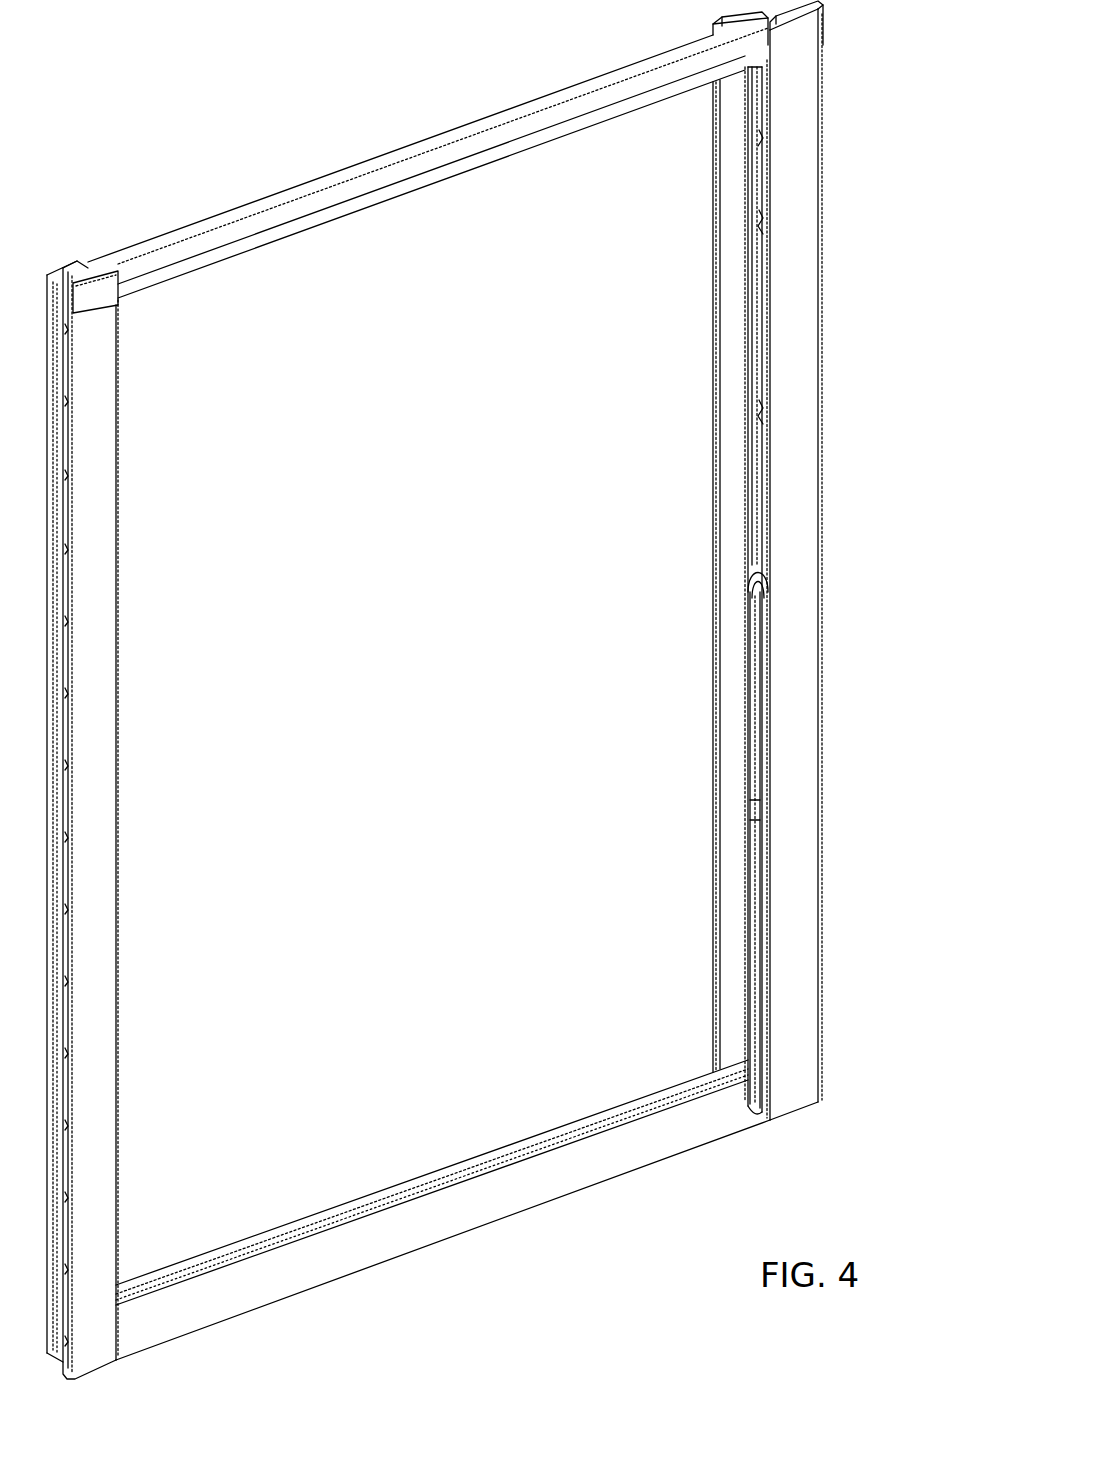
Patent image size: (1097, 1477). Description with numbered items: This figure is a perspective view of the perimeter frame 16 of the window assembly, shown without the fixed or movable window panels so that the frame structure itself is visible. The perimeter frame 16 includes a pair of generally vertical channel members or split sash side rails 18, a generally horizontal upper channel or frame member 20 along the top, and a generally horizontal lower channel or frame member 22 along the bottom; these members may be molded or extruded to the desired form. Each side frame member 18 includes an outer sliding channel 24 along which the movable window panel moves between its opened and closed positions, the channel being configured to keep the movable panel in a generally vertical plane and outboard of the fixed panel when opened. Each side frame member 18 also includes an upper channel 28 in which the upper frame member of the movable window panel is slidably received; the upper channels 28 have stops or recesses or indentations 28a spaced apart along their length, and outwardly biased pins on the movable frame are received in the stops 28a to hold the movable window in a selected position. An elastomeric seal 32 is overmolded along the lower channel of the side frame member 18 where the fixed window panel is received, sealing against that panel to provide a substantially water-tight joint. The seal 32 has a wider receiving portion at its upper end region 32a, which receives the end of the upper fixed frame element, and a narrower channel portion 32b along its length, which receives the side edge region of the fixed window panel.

The perimeter frame 16 is at (208, 155).
The side frame member 18 is at (92, 893).
The upper frame member 20 is at (488, 130).
The lower frame member 22 is at (460, 1210).
The outer sliding channel 24 is at (733, 508).
The upper channel 28 is at (760, 407).
The stops 28a is at (760, 223).
The elastomeric seal 32 is at (763, 690).
The upper end region 32a is at (752, 600).
The narrower channel portion 32b is at (765, 810).